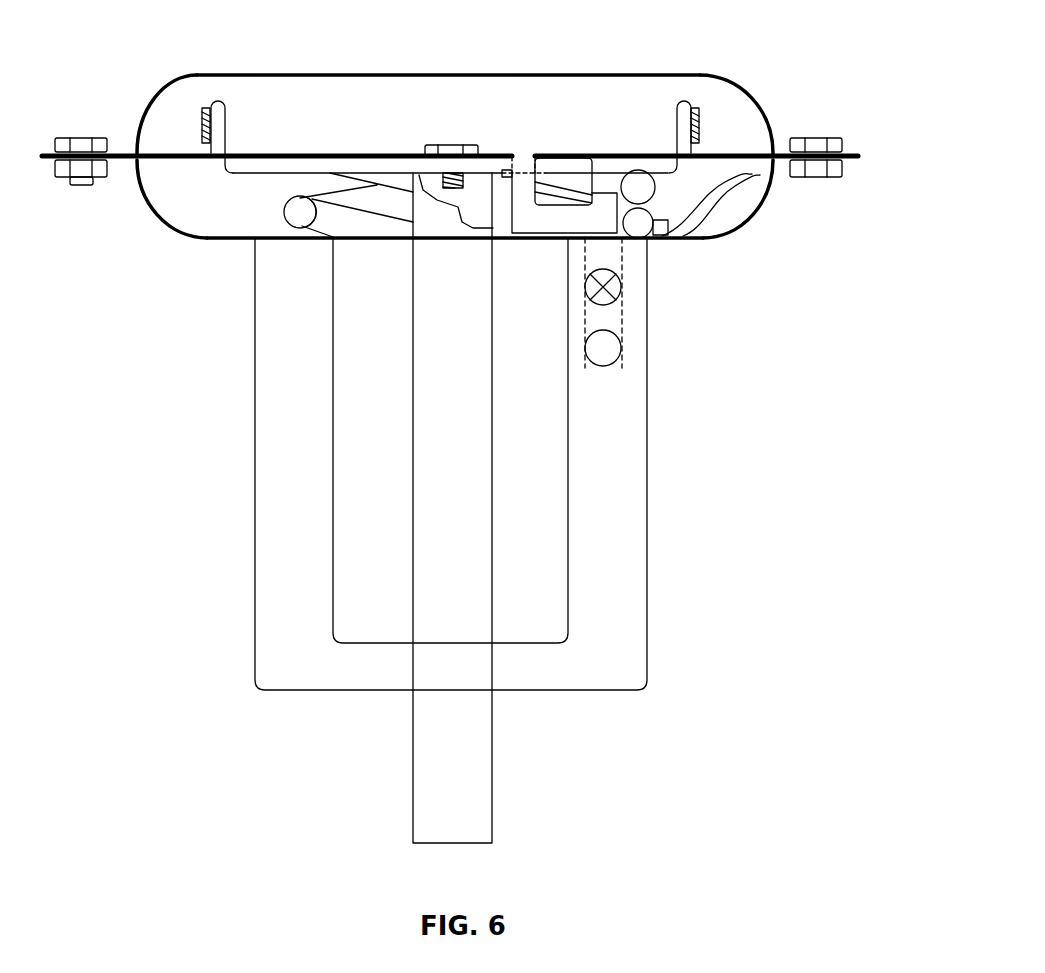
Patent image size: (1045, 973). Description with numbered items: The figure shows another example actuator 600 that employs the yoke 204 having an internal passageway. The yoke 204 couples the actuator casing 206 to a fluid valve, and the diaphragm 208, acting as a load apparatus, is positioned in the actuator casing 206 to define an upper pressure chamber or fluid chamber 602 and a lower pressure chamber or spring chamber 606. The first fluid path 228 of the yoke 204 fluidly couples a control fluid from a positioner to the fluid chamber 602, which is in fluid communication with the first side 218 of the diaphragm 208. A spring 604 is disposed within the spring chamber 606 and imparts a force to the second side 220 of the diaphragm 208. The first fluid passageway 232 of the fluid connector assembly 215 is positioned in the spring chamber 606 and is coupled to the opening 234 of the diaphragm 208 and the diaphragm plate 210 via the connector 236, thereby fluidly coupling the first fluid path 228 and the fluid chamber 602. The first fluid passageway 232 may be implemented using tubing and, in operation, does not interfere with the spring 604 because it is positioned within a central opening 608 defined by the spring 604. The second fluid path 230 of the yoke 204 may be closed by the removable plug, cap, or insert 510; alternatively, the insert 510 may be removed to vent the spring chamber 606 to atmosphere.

The actuator 600 is at (850, 78).
The yoke 204 is at (647, 655).
The actuator casing 206 is at (140, 128).
The diaphragm 208 is at (743, 150).
The diaphragm plate 210 is at (263, 153).
The fluid connector assembly 215 is at (592, 173).
The first side of the diaphragm 218 is at (190, 153).
The second side of the diaphragm 220 is at (178, 162).
The first fluid path 228 is at (605, 350).
The second fluid path 230 is at (615, 288).
The first fluid passageway 232 is at (560, 213).
The opening 234 is at (522, 153).
The connector 236 is at (557, 157).
The insert 510 is at (603, 289).
The fluid chamber 602 is at (451, 146).
The spring 604 is at (705, 232).
The spring chamber 606 is at (307, 205).
The central opening 608 is at (498, 227).